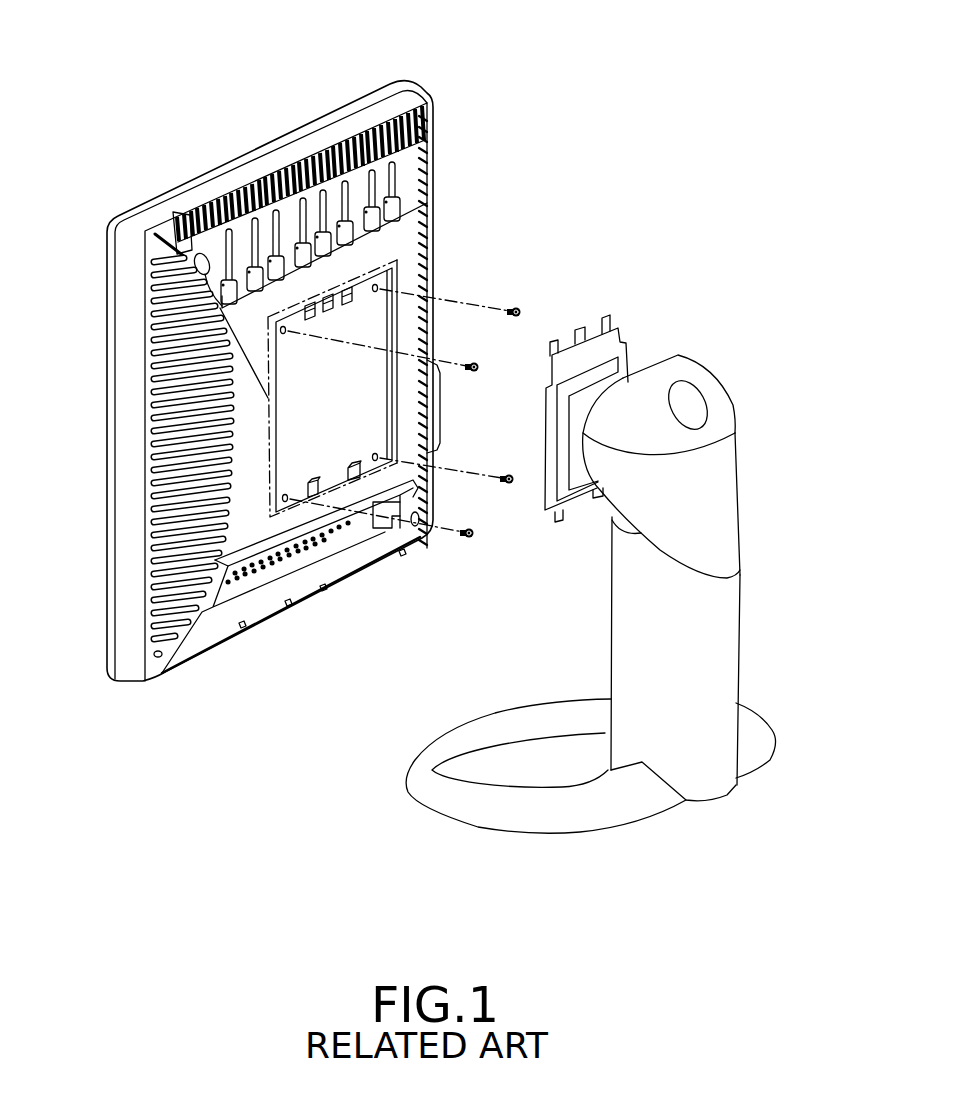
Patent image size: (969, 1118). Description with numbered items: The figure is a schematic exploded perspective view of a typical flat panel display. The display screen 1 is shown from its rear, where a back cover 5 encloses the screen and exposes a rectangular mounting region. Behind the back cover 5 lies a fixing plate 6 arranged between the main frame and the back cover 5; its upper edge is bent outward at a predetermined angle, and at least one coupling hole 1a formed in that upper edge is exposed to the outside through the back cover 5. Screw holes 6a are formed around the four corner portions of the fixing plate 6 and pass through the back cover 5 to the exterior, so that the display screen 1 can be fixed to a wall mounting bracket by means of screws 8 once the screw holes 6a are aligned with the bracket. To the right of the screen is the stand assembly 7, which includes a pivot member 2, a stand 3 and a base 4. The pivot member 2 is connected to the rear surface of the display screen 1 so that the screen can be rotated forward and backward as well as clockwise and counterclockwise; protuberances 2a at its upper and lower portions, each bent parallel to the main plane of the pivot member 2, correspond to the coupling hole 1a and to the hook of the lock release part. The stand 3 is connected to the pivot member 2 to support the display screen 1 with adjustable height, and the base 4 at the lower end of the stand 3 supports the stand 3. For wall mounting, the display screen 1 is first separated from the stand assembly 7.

The display screen 1 is at (276, 133).
The coupling hole 1a is at (347, 303).
The pivot member 2 is at (630, 355).
The protuberances 2a is at (605, 317).
The stand 3 is at (745, 652).
The base 4 is at (462, 800).
The back cover 5 is at (257, 432).
The fixing plate 6 is at (408, 393).
The screw holes 6a is at (284, 494).
The stand assembly 7 is at (752, 452).
The screws 8 is at (460, 546).